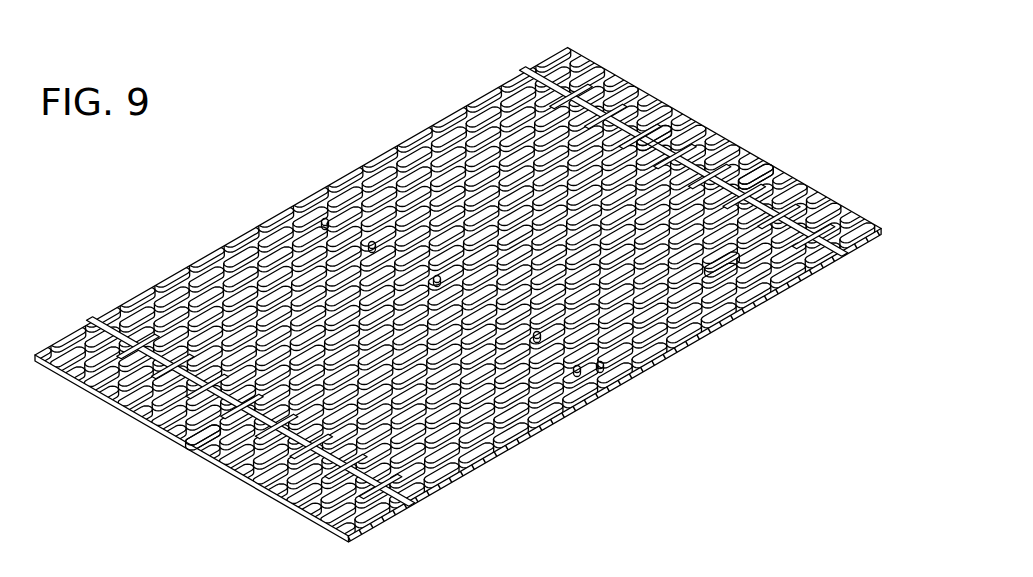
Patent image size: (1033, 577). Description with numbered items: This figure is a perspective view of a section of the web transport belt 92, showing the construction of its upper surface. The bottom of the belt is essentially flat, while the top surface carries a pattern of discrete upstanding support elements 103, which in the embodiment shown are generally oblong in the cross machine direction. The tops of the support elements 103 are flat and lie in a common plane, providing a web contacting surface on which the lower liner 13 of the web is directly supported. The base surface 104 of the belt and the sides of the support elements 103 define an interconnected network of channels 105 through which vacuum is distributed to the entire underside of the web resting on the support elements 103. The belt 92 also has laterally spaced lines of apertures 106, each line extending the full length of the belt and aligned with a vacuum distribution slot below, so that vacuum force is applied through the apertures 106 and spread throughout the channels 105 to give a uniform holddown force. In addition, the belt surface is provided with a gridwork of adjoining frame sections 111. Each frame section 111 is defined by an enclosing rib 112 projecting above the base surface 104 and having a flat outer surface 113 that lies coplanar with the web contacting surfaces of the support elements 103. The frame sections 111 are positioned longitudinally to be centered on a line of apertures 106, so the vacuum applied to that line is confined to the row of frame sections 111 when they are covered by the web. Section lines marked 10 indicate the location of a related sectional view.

The web transport belt 92 is at (454, 108).
The support elements 103 is at (725, 136).
The base surface 104 is at (398, 463).
The channels 105 is at (607, 147).
The apertures 106 is at (437, 277).
The frame sections 111 is at (722, 258).
The rib 112 is at (687, 340).
The outer surface 113 is at (770, 167).
The section line 10 is at (292, 196).
The lower liner 13 is at (522, 78).